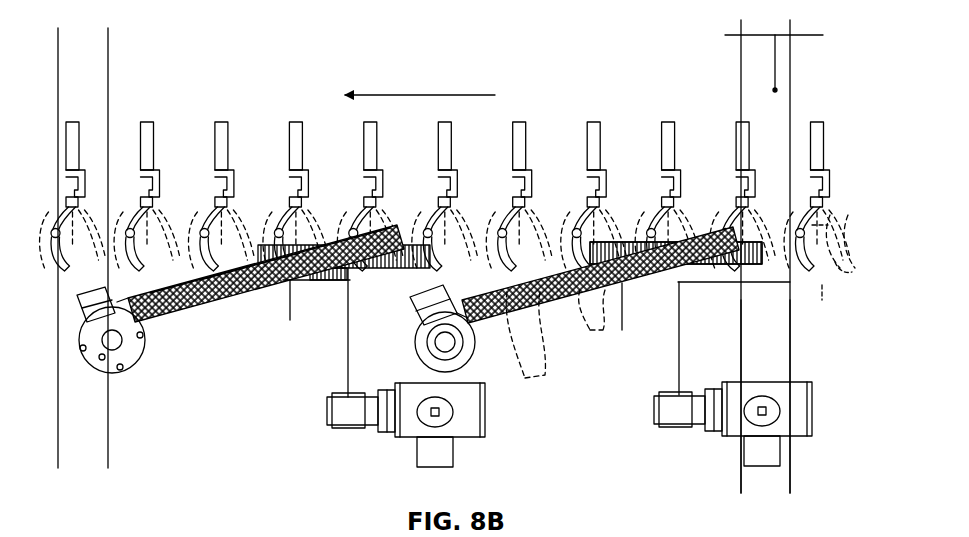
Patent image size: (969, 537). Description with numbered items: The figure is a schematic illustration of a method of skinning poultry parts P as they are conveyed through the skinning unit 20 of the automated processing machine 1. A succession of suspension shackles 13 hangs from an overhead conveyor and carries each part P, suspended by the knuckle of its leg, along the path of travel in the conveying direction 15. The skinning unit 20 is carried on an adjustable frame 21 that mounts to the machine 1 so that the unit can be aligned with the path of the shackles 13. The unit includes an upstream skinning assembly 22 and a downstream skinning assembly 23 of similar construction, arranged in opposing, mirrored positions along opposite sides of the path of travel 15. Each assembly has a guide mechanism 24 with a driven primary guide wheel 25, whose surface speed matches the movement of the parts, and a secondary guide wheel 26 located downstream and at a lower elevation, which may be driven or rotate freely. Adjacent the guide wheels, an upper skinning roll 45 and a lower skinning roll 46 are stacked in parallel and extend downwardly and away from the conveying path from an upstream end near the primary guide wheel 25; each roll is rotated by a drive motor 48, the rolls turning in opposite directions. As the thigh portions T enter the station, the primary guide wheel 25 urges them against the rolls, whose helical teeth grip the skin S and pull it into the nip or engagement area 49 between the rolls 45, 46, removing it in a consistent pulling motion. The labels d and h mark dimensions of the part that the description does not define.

The automated processing line, machine or system 1 is at (631, 82).
The poultry leg suspension shackle 13 is at (825, 146).
The conveying direction 15 is at (414, 95).
The skinning unit 20 is at (289, 96).
The adjustable frame 21 is at (778, 343).
The first or upstream skinning assembly 22 is at (628, 378).
The second or downstream skinning assembly 23 is at (260, 388).
The guide mechanism 24 is at (626, 226).
The primary guide wheel 25 is at (322, 226).
The secondary guide wheel 26 is at (328, 308).
The upper skinning roll 45 is at (194, 266).
The lower skinning roll 46 is at (172, 317).
The drive motor 48 is at (93, 363).
The nip or engagement area 49 is at (235, 297).
The skin S is at (594, 332).
The animal part P is at (839, 241).
The thigh portion T is at (840, 270).
The preform diameter d is at (818, 222).
The preform height h is at (830, 306).